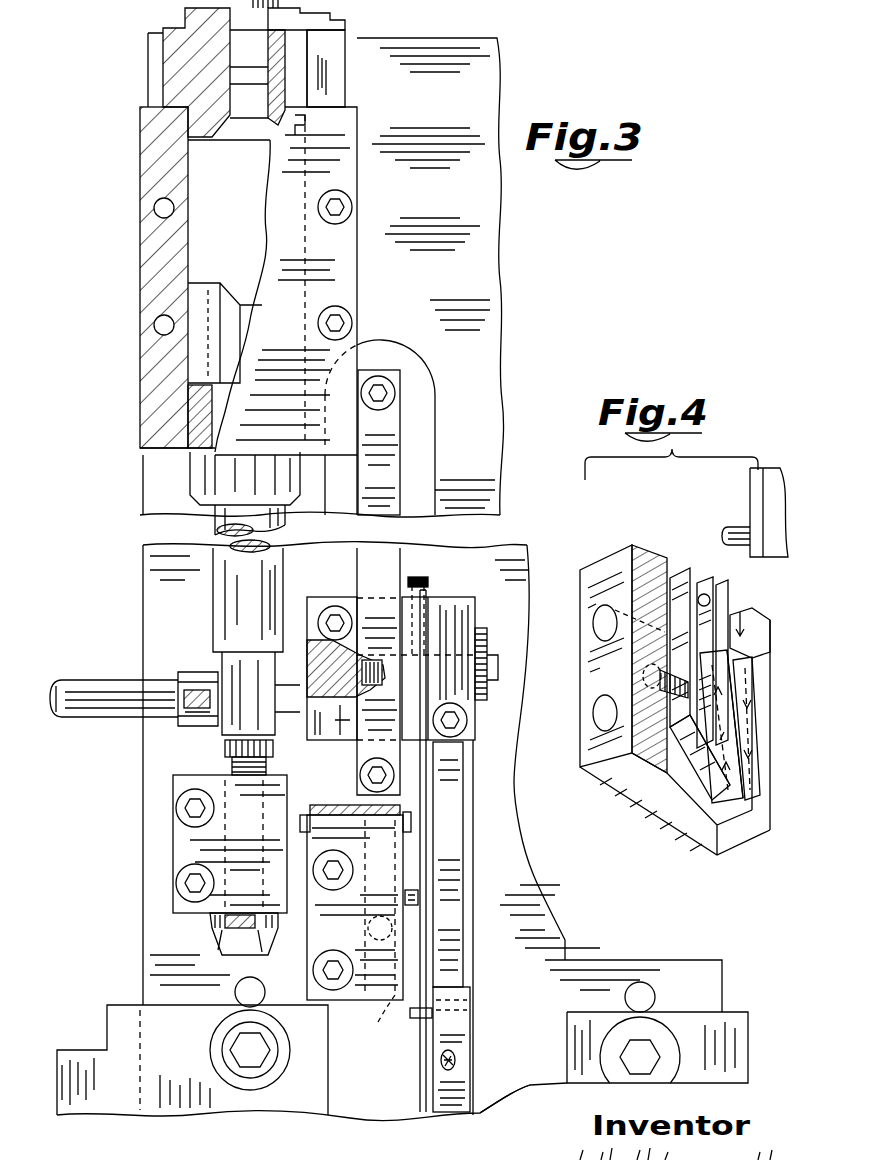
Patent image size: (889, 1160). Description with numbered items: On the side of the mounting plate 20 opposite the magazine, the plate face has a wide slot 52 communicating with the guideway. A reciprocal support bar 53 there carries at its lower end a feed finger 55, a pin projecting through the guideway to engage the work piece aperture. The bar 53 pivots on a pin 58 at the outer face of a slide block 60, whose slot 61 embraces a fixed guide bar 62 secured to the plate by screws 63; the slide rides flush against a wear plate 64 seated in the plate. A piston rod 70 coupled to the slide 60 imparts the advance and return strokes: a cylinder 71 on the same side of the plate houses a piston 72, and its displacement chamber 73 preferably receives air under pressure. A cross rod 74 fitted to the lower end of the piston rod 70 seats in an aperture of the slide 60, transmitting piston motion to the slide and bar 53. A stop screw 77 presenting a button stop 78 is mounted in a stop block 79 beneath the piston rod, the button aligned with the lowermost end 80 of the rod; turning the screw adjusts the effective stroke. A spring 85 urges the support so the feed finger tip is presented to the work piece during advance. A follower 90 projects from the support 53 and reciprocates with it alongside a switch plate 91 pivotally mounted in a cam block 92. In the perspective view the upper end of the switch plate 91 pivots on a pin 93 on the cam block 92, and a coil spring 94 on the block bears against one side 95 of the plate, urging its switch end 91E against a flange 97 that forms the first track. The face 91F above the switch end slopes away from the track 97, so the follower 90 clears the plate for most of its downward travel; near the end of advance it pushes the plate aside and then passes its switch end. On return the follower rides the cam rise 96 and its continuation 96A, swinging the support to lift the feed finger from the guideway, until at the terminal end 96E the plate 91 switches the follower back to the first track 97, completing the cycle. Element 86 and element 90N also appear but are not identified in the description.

In FIG. 3, the mounting plate 20 is at (440, 52).
In FIG. 3, the slot 52 is at (432, 1118).
In FIG. 3, the support bar 53 is at (456, 1008).
In FIG. 4, the support bar 53 is at (752, 478).
In FIG. 3, the feed finger 55 is at (455, 1058).
In FIG. 3, the pin 58 is at (440, 630).
In FIG. 3, the slide block 60 is at (322, 600).
In FIG. 3, the slot 61 is at (360, 612).
In FIG. 3, the guide bar 62 is at (378, 453).
In FIG. 3, the screws 63 is at (380, 392).
In FIG. 3, the wear plate 64 is at (415, 490).
In FIG. 3, the piston rod 70 is at (243, 600).
In FIG. 3, the cylinder 71 is at (322, 272).
In FIG. 3, the piston 72 is at (203, 405).
In FIG. 3, the displacement chamber 73 is at (252, 199).
In FIG. 3, the cross rod 74 is at (72, 690).
In FIG. 3, the stop screw 77 is at (232, 763).
In FIG. 3, the button stop 78 is at (268, 762).
In FIG. 3, the stop block 79 is at (173, 903).
In FIG. 3, the lowermost end of piston rod 80 is at (225, 740).
In FIG. 3, the spring 85 is at (448, 884).
In FIG. 3, the screw 86 is at (458, 632).
In FIG. 3, the follower 90 is at (428, 1018).
In FIG. 4, the follower 90 is at (736, 528).
In FIG. 3, the notch 90N is at (418, 912).
In FIG. 3, the switch plate 91 is at (385, 868).
In FIG. 4, the switch plate 91 is at (700, 571).
In FIG. 4, the switch end 91E is at (712, 812).
In FIG. 4, the face of switch plate 91F is at (718, 620).
In FIG. 3, the cam block 92 is at (355, 990).
In FIG. 4, the cam block 92 is at (645, 767).
In FIG. 3, the pin 93 is at (408, 802).
In FIG. 4, the pin 93 is at (704, 594).
In FIG. 3, the coil spring 94 is at (370, 928).
In FIG. 4, the coil spring 94 is at (662, 695).
In FIG. 4, the side of switch plate 95 is at (660, 625).
In FIG. 3, the cam rise 96 is at (378, 1022).
In FIG. 4, the cam rise 96 is at (722, 822).
In FIG. 4, the continuation of cam rise 96A is at (722, 748).
In FIG. 4, the terminal end 96E is at (742, 620).
In FIG. 4, the flange 97 is at (752, 700).